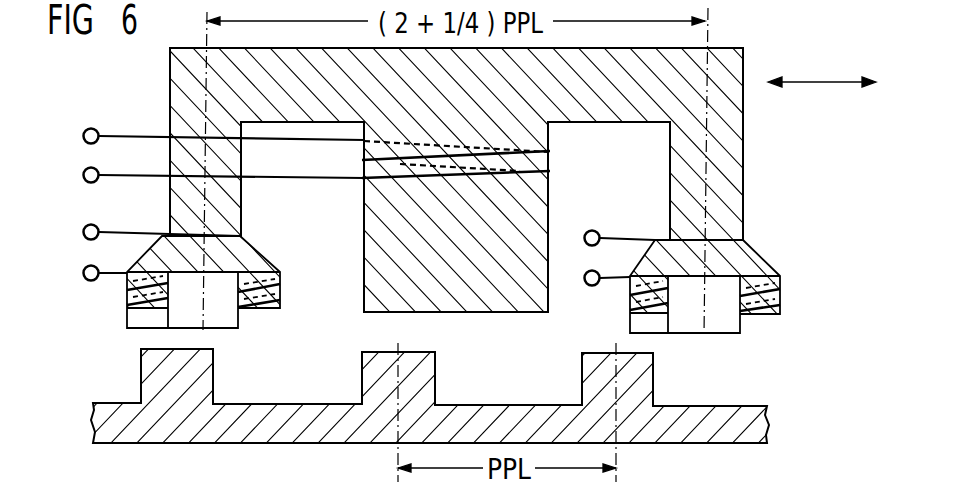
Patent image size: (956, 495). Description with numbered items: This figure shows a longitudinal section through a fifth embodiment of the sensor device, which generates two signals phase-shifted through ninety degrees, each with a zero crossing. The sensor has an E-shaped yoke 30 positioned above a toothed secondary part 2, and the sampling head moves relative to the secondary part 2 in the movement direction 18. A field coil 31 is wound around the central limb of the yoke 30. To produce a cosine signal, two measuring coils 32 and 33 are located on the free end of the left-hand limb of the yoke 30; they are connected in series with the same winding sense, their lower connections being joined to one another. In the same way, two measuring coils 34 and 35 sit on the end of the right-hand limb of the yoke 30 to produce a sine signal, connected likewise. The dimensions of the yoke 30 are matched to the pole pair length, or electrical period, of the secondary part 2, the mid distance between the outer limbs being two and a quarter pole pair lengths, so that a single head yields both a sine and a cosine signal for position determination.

The secondary part 2 is at (747, 413).
The movement direction 18 is at (826, 82).
The E-shaped yoke 30 is at (722, 62).
The field coil 31 is at (520, 135).
The measuring coil 32 is at (127, 297).
The measuring coil 33 is at (280, 302).
The measuring coil 34 is at (630, 296).
The measuring coil 35 is at (780, 306).